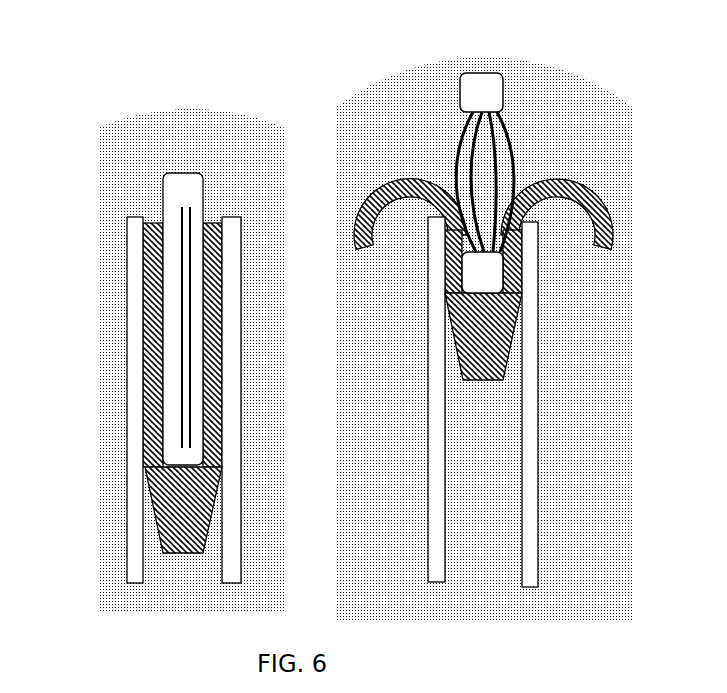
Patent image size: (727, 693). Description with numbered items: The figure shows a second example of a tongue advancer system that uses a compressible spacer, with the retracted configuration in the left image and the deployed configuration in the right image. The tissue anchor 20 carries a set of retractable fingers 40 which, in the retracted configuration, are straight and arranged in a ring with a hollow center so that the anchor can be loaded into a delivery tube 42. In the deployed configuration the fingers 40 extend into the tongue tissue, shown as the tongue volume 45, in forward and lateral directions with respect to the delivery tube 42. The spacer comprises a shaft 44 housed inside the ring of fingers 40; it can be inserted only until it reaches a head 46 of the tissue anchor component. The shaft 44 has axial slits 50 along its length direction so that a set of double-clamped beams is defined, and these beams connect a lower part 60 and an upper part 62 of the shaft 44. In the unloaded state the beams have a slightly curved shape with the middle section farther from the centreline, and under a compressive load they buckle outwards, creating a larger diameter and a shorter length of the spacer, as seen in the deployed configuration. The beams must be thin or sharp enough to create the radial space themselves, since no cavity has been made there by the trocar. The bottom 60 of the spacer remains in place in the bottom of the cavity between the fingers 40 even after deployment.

The tissue anchor 20 is at (164, 563).
The retractable fingers 40 is at (153, 390).
The delivery tube 42 is at (132, 540).
The shaft 44 is at (204, 183).
The tongue volume 45 is at (127, 162).
The head 46 is at (178, 497).
The axial slits 50 is at (180, 337).
The lower part 60 is at (503, 278).
The upper part 62 is at (503, 88).